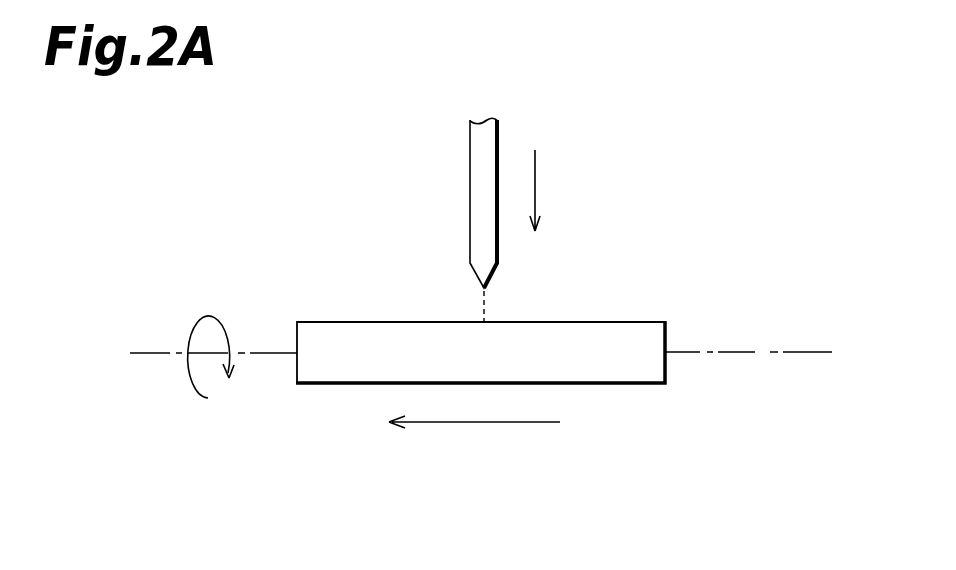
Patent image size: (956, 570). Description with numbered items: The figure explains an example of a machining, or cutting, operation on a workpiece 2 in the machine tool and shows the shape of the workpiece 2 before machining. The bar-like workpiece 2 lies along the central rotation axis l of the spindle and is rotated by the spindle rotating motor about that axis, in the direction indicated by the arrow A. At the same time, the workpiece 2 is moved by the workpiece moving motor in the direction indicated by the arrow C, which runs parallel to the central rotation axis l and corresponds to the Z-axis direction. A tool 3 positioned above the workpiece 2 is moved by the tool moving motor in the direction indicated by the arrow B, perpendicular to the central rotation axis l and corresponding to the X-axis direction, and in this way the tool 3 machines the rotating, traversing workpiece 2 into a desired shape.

The workpiece 2 is at (610, 384).
The tool 3 is at (476, 212).
The arrow A is at (213, 312).
The arrow B is at (536, 176).
The arrow C is at (498, 423).
The central rotation axis l is at (755, 353).